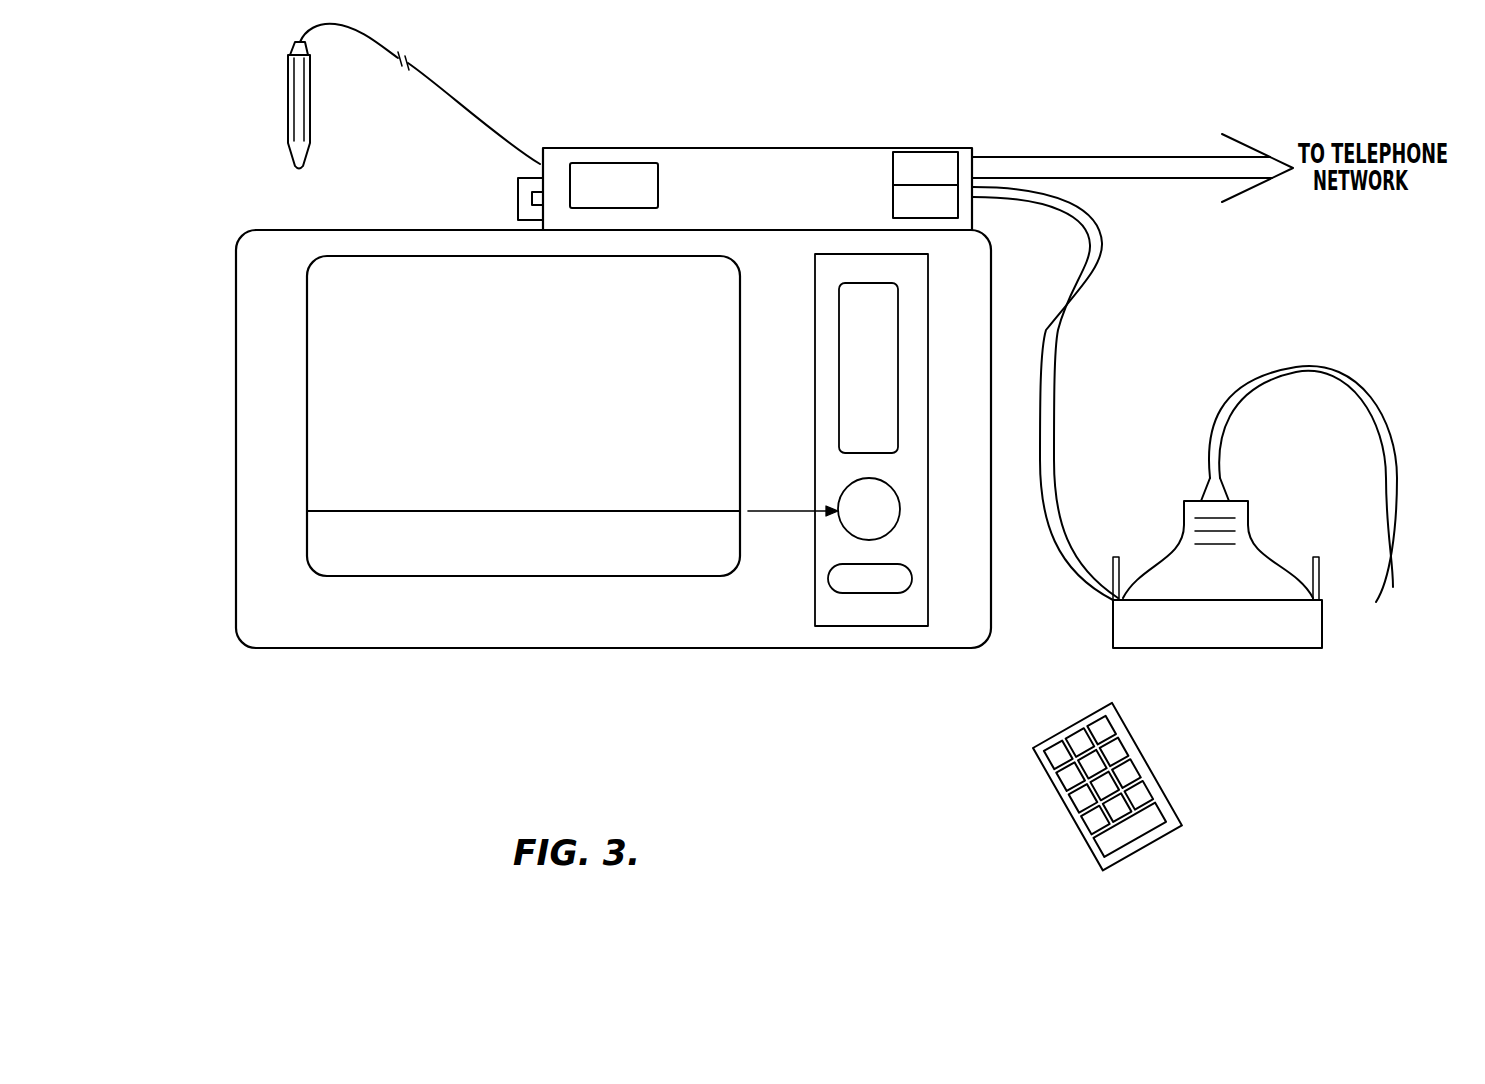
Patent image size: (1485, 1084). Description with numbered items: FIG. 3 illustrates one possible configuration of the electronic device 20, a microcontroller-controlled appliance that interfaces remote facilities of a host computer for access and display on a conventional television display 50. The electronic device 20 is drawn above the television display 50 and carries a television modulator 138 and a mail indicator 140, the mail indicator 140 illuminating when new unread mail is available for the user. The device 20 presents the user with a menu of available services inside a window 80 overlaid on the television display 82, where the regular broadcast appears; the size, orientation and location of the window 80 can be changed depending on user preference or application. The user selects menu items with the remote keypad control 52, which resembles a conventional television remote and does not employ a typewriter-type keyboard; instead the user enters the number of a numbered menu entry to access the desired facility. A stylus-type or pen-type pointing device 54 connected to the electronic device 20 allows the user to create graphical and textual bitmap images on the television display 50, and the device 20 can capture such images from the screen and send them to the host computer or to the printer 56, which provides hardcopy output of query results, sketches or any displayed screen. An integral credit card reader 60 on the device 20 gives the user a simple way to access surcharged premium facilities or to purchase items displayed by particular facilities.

The electronic device 20 is at (742, 148).
The television display 50 is at (236, 408).
The remote keypad control 52 is at (1152, 765).
The pointing device 54 is at (288, 103).
The printer 56 is at (1266, 534).
The credit card reader 60 is at (518, 183).
The window 80 is at (366, 553).
The television display 82 is at (538, 453).
The television modulator 138 is at (955, 157).
The mail indicator 140 is at (893, 200).